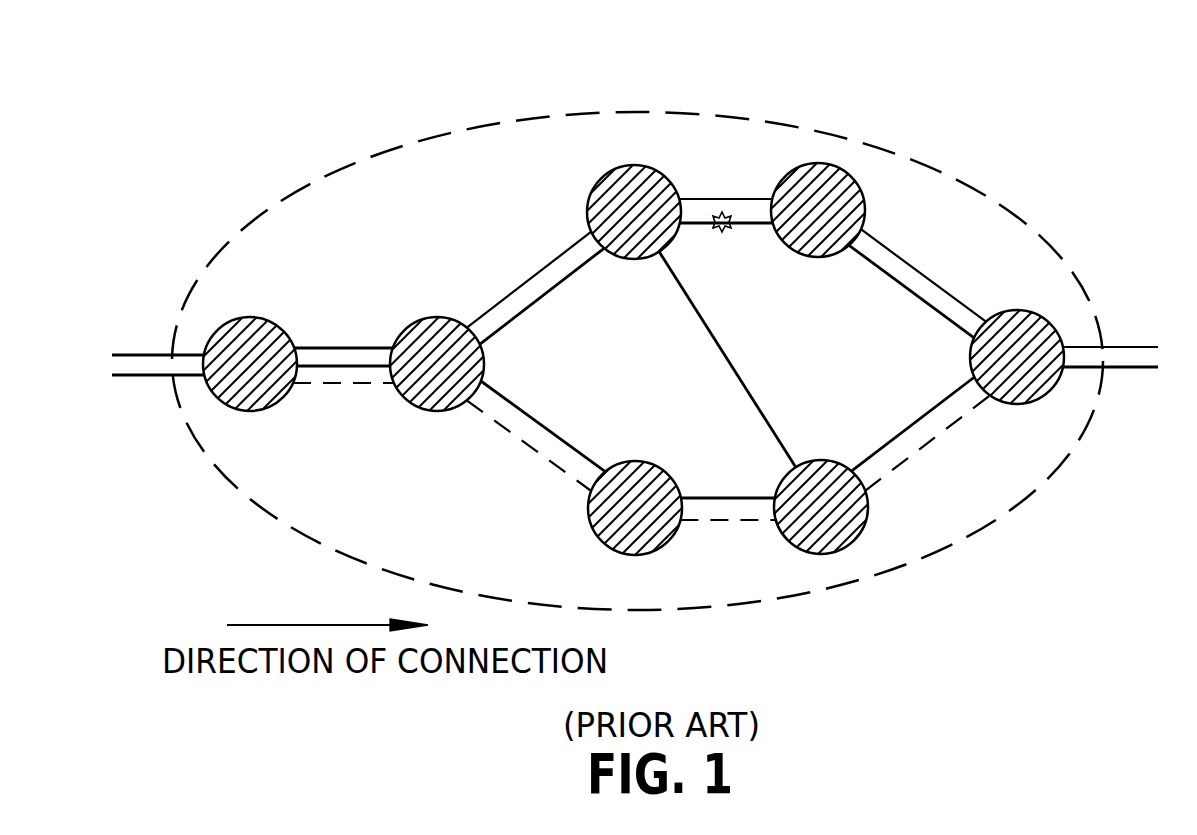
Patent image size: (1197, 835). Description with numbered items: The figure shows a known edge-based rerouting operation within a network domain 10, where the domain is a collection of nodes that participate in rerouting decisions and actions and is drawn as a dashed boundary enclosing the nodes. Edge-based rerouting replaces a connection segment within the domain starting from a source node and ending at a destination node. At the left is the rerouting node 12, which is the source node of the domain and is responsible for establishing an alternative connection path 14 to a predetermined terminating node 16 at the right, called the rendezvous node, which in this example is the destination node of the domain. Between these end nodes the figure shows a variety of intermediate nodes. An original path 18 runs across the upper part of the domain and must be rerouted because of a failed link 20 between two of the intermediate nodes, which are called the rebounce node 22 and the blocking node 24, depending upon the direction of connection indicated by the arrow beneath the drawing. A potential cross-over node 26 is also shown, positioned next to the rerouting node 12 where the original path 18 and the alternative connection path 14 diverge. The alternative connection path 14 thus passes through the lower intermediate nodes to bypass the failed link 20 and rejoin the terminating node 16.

The domain 10 is at (428, 137).
The rerouting node 12 is at (238, 410).
The alternative connection path 14 is at (912, 457).
The terminating node 16 is at (1023, 410).
The original path 18 is at (930, 273).
The failed link 20 is at (722, 233).
The rebounce node 22 is at (627, 166).
The blocking node 24 is at (835, 167).
The cross-over node 26 is at (405, 330).